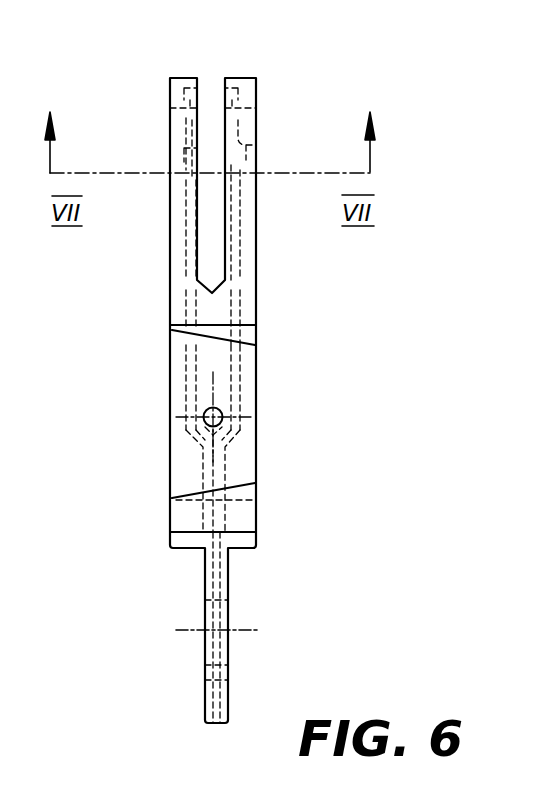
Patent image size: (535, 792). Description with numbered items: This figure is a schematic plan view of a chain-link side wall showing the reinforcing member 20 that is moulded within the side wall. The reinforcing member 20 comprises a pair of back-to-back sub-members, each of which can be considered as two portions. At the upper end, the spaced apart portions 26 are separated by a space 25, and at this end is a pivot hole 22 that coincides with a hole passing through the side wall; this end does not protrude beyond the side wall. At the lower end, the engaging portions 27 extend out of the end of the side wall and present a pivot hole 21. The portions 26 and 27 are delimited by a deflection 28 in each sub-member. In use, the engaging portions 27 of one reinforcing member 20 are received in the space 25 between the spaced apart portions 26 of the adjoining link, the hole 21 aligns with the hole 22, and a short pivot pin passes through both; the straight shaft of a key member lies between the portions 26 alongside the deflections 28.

The reinforcing member 20 is at (228, 693).
The pivot hole 21 is at (203, 638).
The pivot hole 22 is at (193, 167).
The space 25 is at (215, 124).
The spaced apart portions 26 is at (190, 303).
The engaging portions 27 is at (203, 573).
The deflection 28 is at (173, 440).